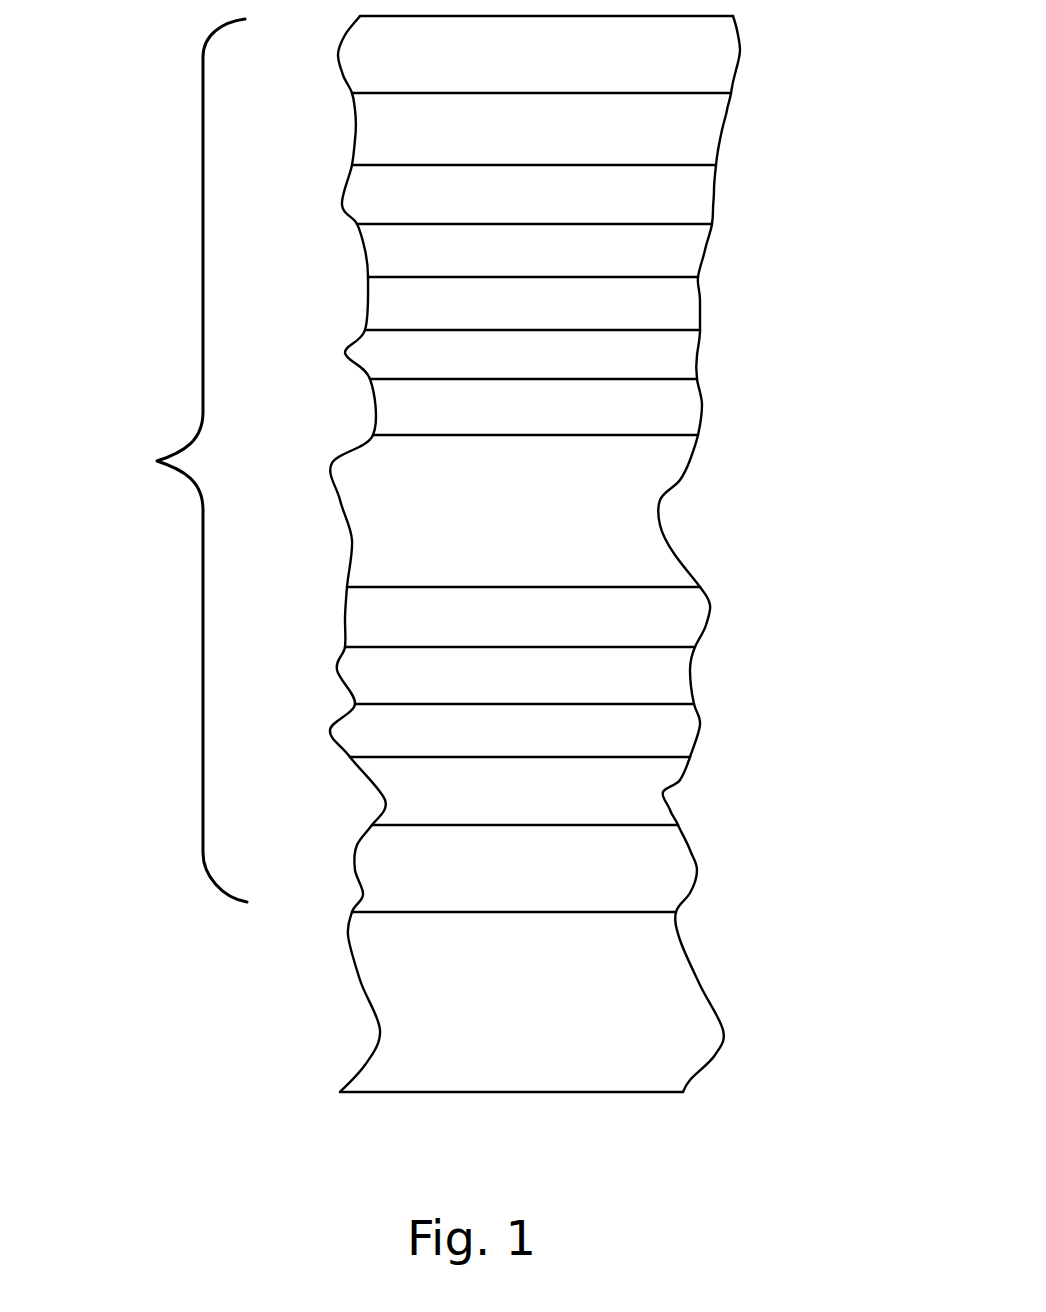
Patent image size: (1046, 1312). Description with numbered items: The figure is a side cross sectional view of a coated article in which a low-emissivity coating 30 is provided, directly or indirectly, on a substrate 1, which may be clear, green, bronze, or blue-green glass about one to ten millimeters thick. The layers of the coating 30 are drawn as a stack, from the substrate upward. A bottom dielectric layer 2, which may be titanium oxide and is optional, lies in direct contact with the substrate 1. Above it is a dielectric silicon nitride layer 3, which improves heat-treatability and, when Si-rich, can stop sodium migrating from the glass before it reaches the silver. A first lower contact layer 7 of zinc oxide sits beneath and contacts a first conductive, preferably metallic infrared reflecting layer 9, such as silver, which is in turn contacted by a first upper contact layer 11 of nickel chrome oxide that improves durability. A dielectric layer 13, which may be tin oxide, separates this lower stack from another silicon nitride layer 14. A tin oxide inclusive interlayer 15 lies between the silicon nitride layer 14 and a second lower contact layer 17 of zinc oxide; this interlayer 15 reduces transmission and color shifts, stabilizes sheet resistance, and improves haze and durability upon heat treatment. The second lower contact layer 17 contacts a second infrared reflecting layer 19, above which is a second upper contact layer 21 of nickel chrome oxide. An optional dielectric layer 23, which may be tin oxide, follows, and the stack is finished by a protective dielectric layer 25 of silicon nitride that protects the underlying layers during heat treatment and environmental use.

The substrate 1 is at (686, 999).
The bottom dielectric layer 2 is at (678, 865).
The dielectric silicon nitride layer 3 is at (657, 787).
The first lower contact layer 7 is at (692, 731).
The first IR reflecting layer 9 is at (680, 675).
The first upper contact layer 11 is at (701, 618).
The dielectric layer 13 is at (655, 500).
The silicon nitride layer 14 is at (700, 408).
The tin oxide inclusive interlayer 15 is at (690, 355).
The second lower contact layer 17 is at (694, 300).
The second IR reflecting layer 19 is at (695, 250).
The second upper contact layer 21 is at (700, 200).
The dielectric layer 23 is at (712, 127).
The protective dielectric layer 25 is at (732, 53).
The coating 30 is at (140, 461).